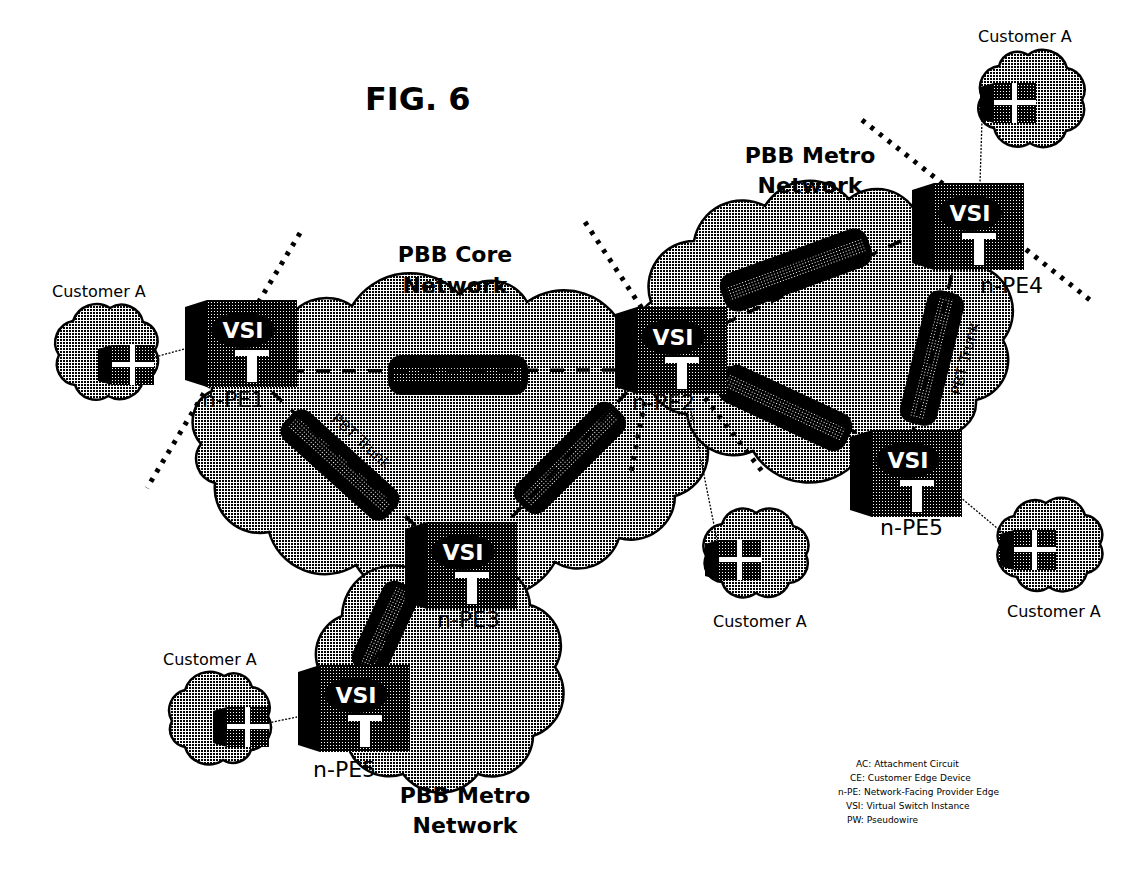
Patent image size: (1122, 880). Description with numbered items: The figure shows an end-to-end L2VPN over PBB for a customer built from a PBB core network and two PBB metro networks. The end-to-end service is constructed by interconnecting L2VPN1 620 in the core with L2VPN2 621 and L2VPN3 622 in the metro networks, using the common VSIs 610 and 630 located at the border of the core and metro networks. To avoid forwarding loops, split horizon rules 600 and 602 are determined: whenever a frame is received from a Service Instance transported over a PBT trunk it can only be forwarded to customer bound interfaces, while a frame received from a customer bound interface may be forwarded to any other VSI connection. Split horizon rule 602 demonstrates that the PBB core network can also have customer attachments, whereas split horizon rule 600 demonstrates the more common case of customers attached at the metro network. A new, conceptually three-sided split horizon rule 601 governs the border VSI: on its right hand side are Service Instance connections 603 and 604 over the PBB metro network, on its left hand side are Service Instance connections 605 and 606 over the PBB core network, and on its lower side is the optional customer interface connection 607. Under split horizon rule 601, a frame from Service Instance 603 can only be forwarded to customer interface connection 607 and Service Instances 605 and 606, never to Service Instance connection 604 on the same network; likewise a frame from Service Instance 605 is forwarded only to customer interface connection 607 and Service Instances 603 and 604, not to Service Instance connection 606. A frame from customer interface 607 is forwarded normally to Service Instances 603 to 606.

The split horizon rule 600 is at (903, 134).
The split horizon rule 601 is at (603, 250).
The split horizon rule 602 is at (293, 252).
The Service Instance connection 603 is at (718, 303).
The Service Instance connection 604 is at (717, 341).
The Service Instance connection 605 is at (597, 366).
The Service Instance connection 606 is at (627, 383).
The customer interface connection 607 is at (690, 450).
The VSI 610 is at (668, 305).
The L2VPN1 620 is at (466, 470).
The L2VPN2 621 is at (853, 315).
The L2VPN3 622 is at (452, 695).
The VSI 630 is at (400, 563).